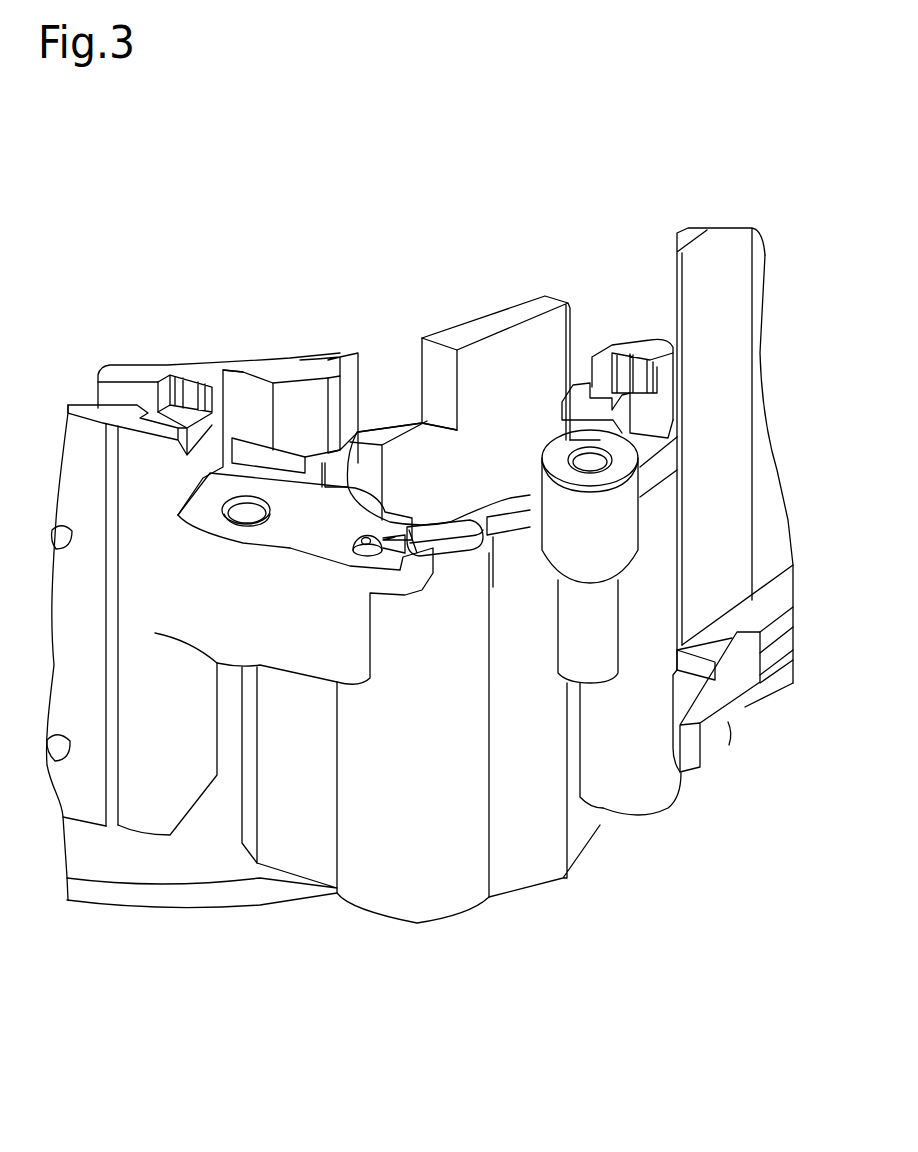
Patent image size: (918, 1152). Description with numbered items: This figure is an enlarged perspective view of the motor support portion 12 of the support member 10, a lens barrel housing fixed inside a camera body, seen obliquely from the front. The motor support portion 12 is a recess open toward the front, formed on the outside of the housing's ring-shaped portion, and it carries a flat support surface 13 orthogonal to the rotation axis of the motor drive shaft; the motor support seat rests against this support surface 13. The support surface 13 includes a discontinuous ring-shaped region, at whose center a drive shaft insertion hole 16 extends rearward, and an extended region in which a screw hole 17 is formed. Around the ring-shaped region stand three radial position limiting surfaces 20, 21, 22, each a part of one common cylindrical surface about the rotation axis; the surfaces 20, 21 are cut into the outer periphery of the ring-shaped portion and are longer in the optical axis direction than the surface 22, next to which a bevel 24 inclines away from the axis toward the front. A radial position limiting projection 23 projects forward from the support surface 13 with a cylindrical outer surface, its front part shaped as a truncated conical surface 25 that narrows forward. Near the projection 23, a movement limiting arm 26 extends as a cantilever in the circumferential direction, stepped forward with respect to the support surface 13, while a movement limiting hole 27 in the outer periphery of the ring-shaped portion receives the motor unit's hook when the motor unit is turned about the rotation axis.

The support member 10 is at (135, 372).
The motor support portion 12 is at (391, 364).
The support surface 13 is at (353, 450).
The drive shaft insertion hole 16 is at (413, 487).
The screw hole 17 is at (247, 522).
The radial position limiting surface 20 is at (350, 397).
The radial position limiting surface 21 is at (438, 368).
The radial position limiting surface 22 is at (513, 498).
The radial position limiting projection 23 is at (372, 558).
The bevel 24 is at (517, 495).
The truncated conical surface 25 is at (366, 549).
The movement limiting arm 26 is at (465, 548).
The movement limiting hole 27 is at (246, 452).